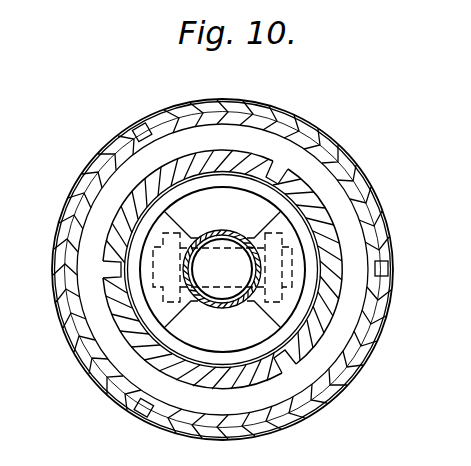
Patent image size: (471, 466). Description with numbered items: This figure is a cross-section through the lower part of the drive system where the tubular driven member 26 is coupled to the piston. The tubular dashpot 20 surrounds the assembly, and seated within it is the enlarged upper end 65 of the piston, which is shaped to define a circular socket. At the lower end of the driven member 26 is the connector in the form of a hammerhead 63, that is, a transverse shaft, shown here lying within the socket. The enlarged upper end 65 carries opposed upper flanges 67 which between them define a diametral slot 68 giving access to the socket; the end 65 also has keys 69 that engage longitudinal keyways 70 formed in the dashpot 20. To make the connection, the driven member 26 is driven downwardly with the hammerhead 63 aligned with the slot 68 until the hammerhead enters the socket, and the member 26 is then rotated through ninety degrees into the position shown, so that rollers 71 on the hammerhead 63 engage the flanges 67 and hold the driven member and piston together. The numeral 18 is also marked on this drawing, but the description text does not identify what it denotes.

The housing 18 is at (390, 256).
The tubular dashpot 20 is at (307, 337).
The tubular driven member 26 is at (249, 234).
The hammerhead 63 is at (300, 251).
The enlarged upper end of the piston 65 is at (147, 213).
The opposed upper flanges 67 is at (293, 295).
The diametral slot 68 is at (182, 378).
The keys 69 is at (267, 173).
The longitudinal keyways 70 is at (283, 171).
The rollers 71 is at (283, 227).